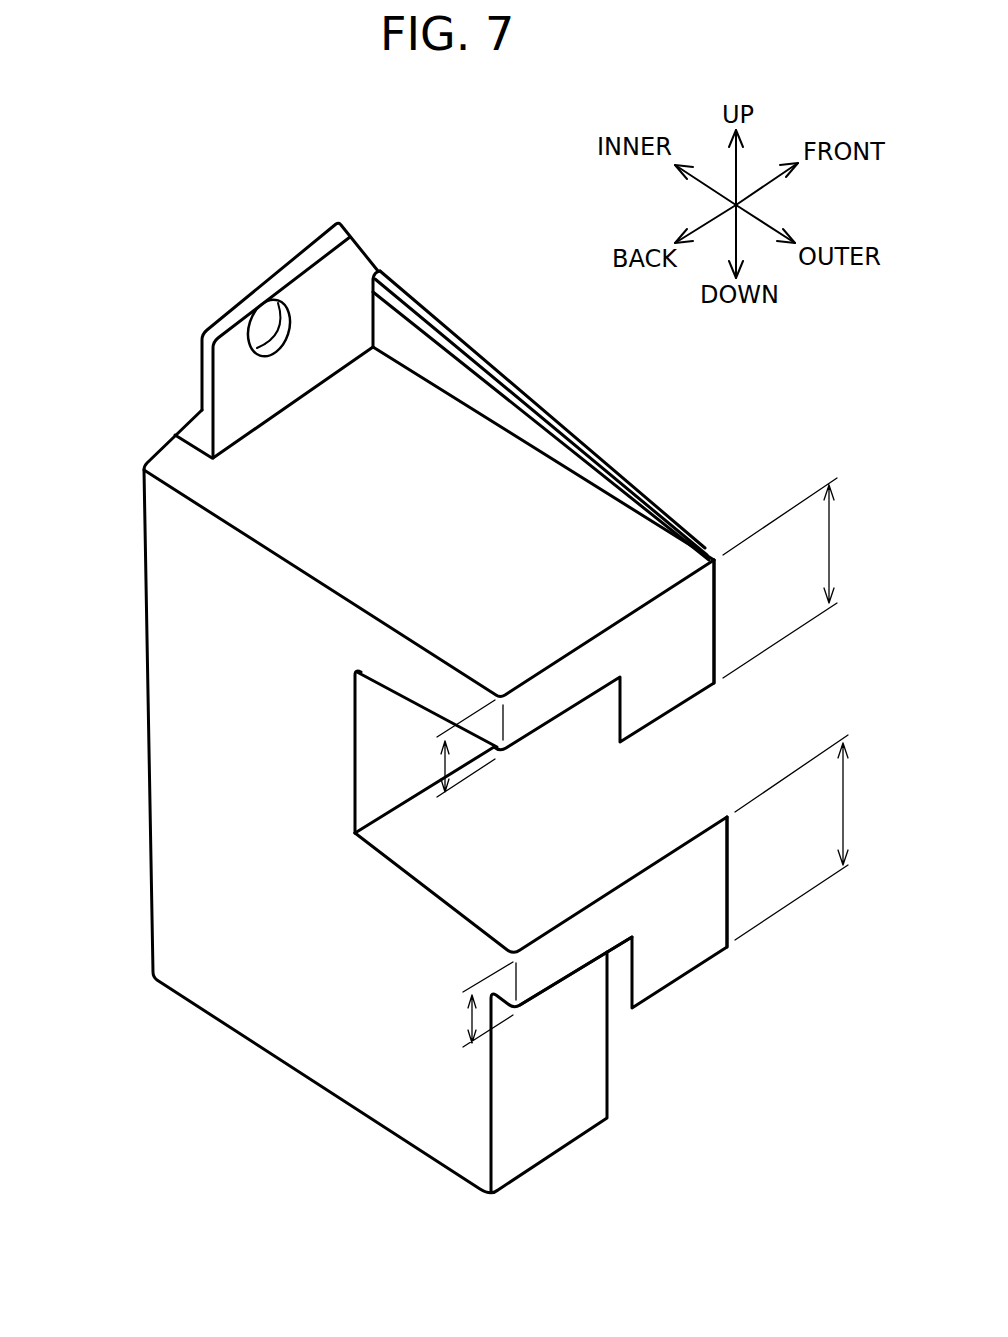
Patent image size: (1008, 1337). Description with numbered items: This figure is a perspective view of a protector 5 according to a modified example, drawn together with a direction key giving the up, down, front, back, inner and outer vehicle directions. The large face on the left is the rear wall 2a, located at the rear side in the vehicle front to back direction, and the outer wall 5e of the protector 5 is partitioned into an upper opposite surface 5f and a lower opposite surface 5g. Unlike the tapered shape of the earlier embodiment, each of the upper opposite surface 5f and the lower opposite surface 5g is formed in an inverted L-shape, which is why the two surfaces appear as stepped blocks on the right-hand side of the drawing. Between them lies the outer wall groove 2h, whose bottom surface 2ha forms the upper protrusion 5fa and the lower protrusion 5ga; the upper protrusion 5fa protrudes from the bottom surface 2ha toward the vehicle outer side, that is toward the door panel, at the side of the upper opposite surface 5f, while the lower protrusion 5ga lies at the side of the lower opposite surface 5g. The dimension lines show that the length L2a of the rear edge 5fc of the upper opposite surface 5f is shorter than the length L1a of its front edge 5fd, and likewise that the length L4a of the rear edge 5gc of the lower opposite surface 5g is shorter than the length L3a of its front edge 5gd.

The protector 5 is at (128, 212).
The rear wall 2a is at (177, 677).
The outer wall groove 2h is at (382, 811).
The bottom surface of the outer wall groove 2ha is at (384, 712).
The upper opposite surface 5f is at (599, 552).
The upper protrusion 5fa is at (657, 678).
The outer wall 5e is at (606, 748).
The rear edge 5fc is at (505, 720).
The front edge 5fd is at (718, 605).
The lower opposite surface 5g is at (688, 912).
The lower protrusion 5ga is at (673, 920).
The rear edge 5gc is at (517, 997).
The front edge 5gd is at (730, 875).
The length of the front edge L1a is at (799, 578).
The length of the rear edge L2a is at (445, 748).
The length of the front edge L3a is at (812, 837).
The length of the rear edge L4a is at (465, 1004).